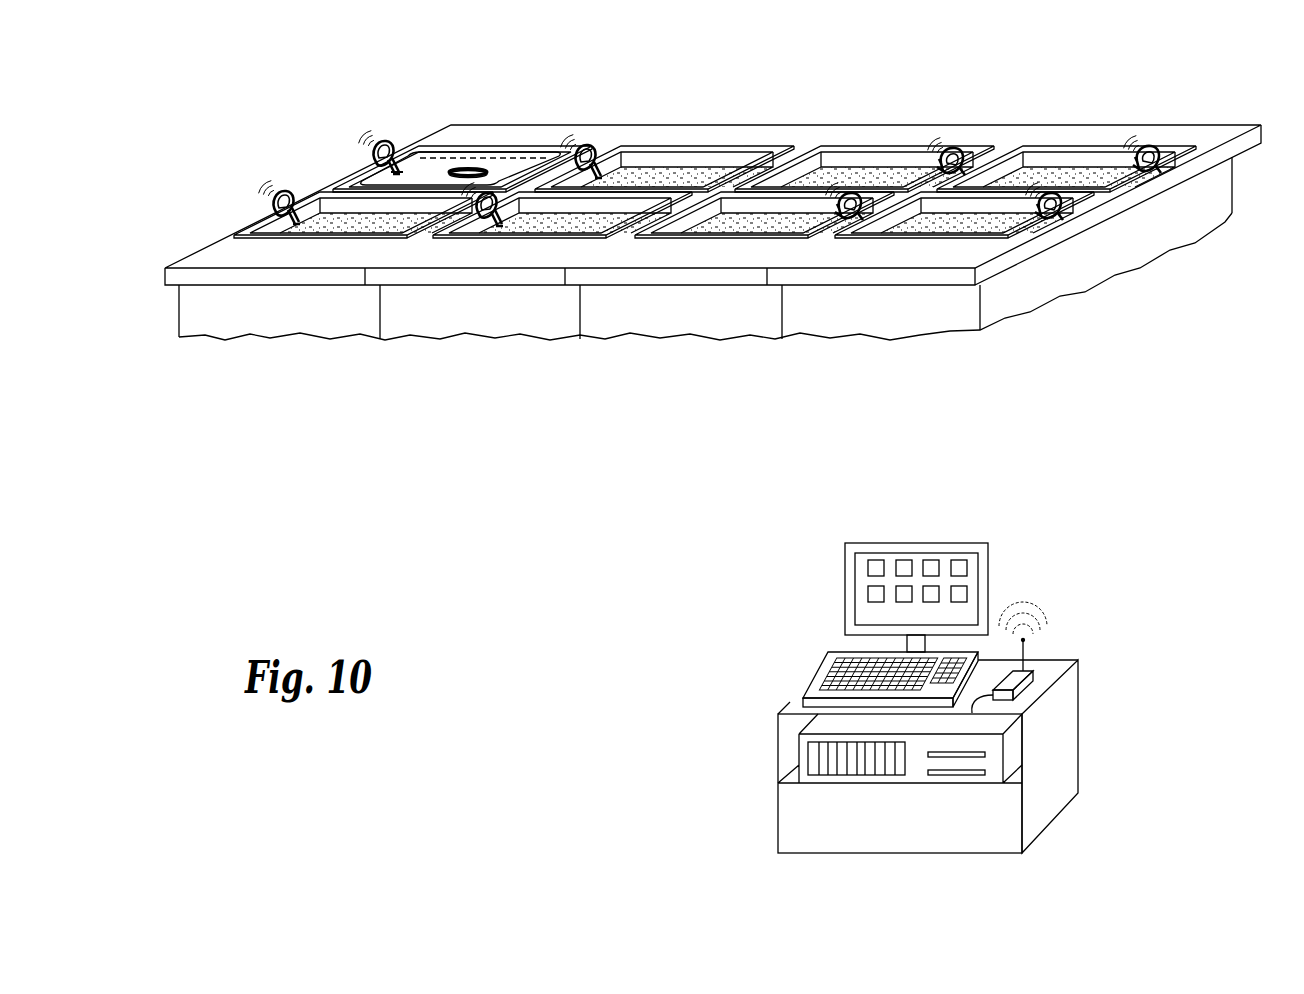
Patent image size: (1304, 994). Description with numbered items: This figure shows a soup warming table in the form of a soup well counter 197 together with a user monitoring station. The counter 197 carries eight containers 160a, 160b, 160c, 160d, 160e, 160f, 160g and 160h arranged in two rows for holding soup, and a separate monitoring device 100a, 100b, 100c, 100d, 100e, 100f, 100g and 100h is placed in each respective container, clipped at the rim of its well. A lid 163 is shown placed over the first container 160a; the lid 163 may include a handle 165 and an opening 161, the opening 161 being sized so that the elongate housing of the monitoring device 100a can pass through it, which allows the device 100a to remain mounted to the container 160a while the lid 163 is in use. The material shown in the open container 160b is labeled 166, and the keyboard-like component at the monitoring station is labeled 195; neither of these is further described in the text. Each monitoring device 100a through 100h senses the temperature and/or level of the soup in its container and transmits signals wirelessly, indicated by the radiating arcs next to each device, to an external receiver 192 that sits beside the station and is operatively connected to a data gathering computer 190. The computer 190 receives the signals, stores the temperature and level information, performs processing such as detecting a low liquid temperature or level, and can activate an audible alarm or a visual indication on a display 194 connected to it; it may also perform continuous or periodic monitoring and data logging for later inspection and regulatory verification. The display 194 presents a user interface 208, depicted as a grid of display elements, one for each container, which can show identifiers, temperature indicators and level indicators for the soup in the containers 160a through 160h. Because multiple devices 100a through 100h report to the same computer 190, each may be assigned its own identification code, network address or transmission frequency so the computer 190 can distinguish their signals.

The monitoring device 100a is at (350, 134).
The monitoring device 100b is at (593, 143).
The monitoring device 100c is at (950, 150).
The monitoring device 100d is at (1150, 150).
The monitoring device 100e is at (275, 204).
The monitoring device 100f is at (488, 226).
The monitoring device 100g is at (836, 223).
The monitoring device 100h is at (1062, 212).
The container 160a is at (462, 131).
The container 160b is at (664, 136).
The container 160c is at (866, 160).
The container 160d is at (1055, 160).
The container 160e is at (325, 225).
The container 160f is at (575, 227).
The container 160g is at (727, 225).
The container 160h is at (933, 230).
The opening 161 is at (403, 158).
The lid 163 is at (528, 166).
The handle 165 is at (463, 167).
The tray contents 166 is at (667, 178).
The data gathering computer 190 is at (800, 755).
The external receiver 192 is at (1035, 678).
The display 194 is at (949, 556).
The keyboard 195 is at (818, 672).
The soup well counter 197 is at (450, 376).
The user interface 208 is at (979, 572).